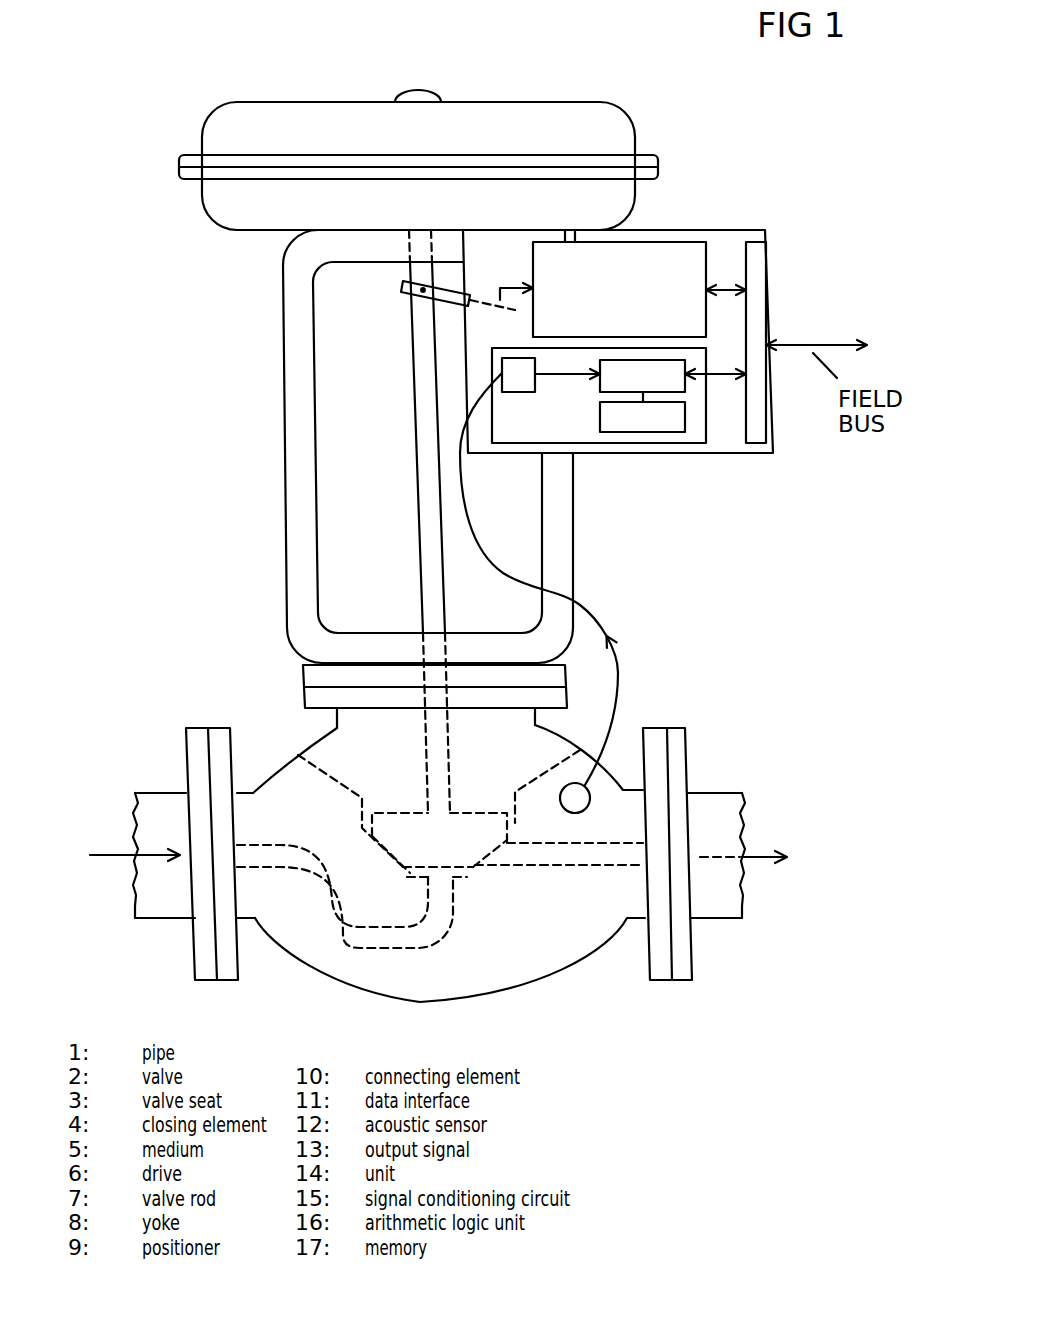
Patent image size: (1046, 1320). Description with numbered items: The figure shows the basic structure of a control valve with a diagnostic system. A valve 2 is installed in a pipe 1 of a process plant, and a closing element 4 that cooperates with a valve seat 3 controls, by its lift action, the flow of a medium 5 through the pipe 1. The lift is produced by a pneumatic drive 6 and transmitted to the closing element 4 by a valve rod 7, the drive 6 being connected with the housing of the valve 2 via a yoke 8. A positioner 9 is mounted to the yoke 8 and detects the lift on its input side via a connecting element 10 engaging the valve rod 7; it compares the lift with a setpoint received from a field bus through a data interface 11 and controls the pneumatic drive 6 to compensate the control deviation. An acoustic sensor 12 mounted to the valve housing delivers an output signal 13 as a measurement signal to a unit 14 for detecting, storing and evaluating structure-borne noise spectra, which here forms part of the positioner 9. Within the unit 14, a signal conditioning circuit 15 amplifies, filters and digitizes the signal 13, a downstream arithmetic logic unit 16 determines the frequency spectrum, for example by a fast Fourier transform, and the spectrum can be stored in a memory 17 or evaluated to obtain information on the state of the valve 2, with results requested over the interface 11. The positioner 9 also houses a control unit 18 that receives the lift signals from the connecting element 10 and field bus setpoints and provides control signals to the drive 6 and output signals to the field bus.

The pipe 1 is at (162, 797).
The valve 2 is at (330, 973).
The valve seat 3 is at (478, 873).
The closing element 4 is at (335, 757).
The medium 5 is at (124, 855).
The pneumatic drive 6 is at (208, 135).
The valve rod 7 is at (423, 567).
The yoke 8 is at (297, 442).
The positioner 9 is at (725, 240).
The connecting element 10 is at (448, 298).
The data interface 11 is at (767, 318).
The acoustic sensor 12 is at (580, 784).
The output signal 13 is at (614, 657).
The unit 14 is at (587, 441).
The signal conditioning circuit 15 is at (518, 389).
The arithmetic logic unit 16 is at (673, 380).
The memory 17 is at (642, 417).
The control unit 18 is at (680, 242).